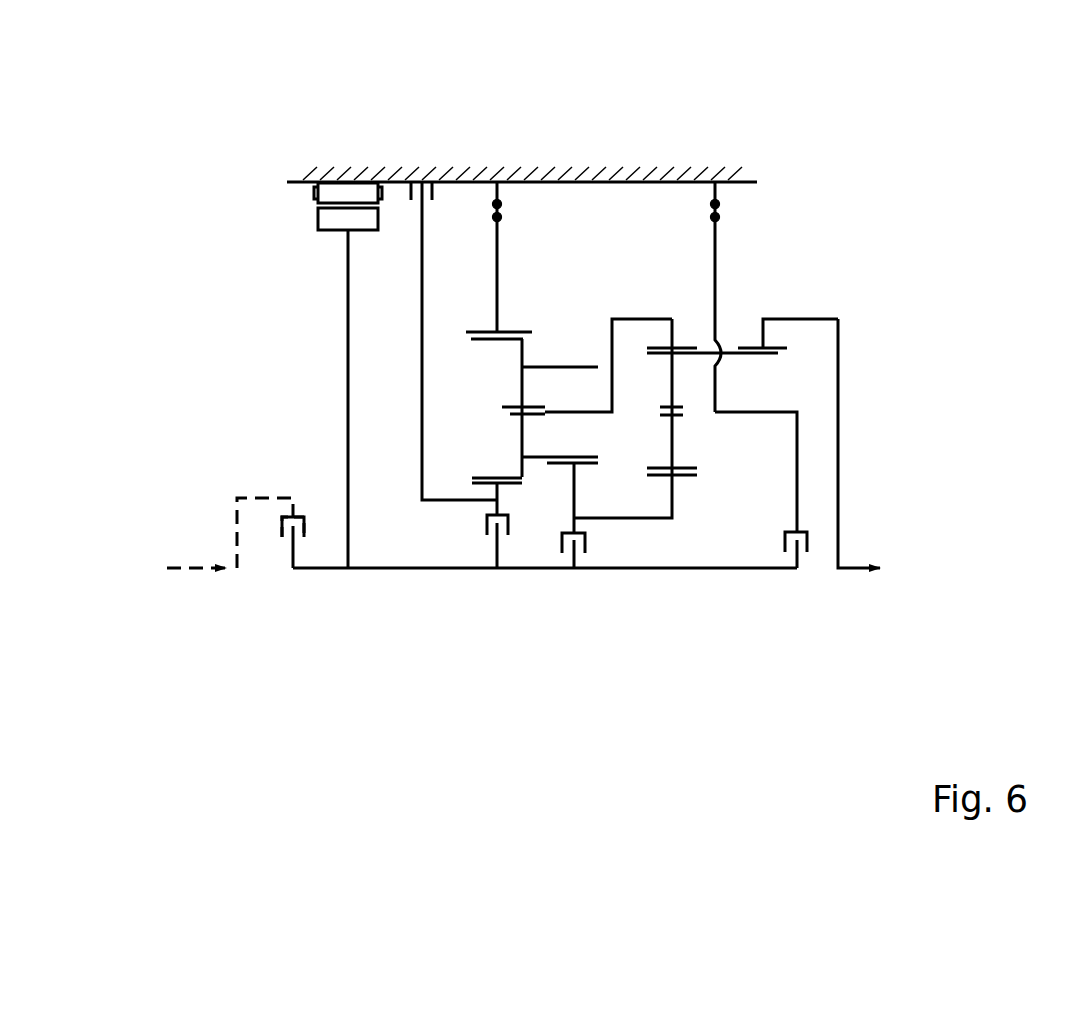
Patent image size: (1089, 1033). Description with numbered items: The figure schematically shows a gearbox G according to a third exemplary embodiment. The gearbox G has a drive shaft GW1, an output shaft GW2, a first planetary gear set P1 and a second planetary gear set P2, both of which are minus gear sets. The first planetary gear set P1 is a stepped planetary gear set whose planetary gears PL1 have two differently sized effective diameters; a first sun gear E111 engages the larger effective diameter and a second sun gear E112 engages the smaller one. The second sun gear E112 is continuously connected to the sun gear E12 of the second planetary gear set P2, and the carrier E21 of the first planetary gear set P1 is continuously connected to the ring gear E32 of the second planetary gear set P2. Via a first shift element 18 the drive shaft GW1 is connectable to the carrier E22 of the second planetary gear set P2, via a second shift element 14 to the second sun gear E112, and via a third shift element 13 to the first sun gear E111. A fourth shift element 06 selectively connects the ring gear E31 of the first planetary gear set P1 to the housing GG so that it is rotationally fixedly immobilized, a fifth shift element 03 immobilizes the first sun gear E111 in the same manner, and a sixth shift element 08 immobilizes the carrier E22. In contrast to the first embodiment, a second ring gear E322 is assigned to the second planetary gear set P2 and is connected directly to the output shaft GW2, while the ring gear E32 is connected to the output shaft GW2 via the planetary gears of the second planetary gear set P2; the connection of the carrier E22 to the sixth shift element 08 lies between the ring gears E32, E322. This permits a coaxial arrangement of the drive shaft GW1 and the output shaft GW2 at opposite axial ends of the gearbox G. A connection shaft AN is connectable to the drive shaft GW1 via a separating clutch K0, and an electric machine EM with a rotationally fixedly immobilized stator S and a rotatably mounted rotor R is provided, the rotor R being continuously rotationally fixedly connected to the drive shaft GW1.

The housing GG is at (360, 178).
The electric machine EM is at (162, 172).
The stator S is at (310, 192).
The rotor R is at (310, 220).
The gearbox G is at (255, 410).
The fifth shift element 03 is at (418, 178).
The fourth shift element 06 is at (490, 196).
The ring gear of the first planetary gear set E31 is at (516, 328).
The planetary gears PL1 is at (563, 363).
The ring gear of the second planetary gear set E32 is at (690, 344).
The sixth shift element 08 is at (708, 198).
The second ring gear E322 is at (753, 344).
The carrier of the second planetary gear set E22 is at (763, 409).
The connection shaft AN is at (197, 572).
The separating clutch K0 is at (284, 545).
The drive shaft GW1 is at (370, 569).
The first sun gear of the first planetary gear set E111 is at (484, 492).
The third shift element 13 is at (491, 541).
The carrier of the first planetary gear set E21 is at (562, 415).
The second shift element 14 is at (578, 550).
The second sun gear of the first planetary gear set E112 is at (589, 466).
The sun gear of the second planetary gear set E12 is at (685, 478).
The first shift element 18 is at (803, 560).
The output shaft GW2 is at (857, 569).
The first planetary gear set P1 is at (522, 580).
The second planetary gear set P2 is at (715, 580).